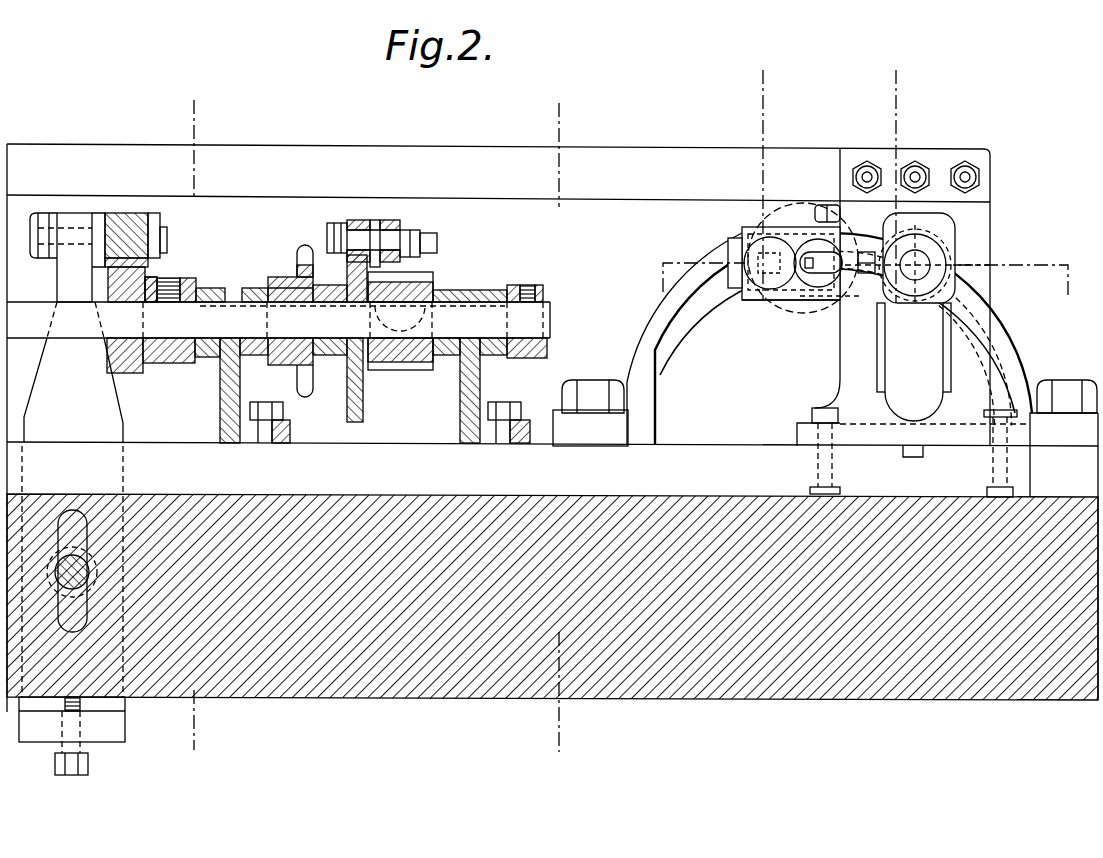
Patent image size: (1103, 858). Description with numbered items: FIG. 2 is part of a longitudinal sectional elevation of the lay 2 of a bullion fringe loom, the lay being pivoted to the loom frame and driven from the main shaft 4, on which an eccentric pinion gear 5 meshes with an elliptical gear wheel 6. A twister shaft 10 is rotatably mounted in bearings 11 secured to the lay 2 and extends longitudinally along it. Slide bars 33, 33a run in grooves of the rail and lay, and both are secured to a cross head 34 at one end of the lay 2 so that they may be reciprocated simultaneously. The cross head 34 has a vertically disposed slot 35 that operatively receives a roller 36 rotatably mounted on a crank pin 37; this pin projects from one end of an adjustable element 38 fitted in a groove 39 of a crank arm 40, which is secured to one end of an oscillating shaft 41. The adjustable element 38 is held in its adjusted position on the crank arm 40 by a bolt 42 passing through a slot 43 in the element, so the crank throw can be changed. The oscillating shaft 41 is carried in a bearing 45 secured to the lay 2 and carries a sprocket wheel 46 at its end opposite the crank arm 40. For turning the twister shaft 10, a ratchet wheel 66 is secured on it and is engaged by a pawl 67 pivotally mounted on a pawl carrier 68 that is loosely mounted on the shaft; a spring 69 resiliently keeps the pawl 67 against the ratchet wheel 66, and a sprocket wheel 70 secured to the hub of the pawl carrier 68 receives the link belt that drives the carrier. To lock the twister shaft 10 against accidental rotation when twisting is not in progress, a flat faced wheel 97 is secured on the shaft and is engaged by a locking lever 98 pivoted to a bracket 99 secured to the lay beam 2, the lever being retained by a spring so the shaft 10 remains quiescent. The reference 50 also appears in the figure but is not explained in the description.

The lay 2 is at (822, 683).
The main shaft 4 is at (667, 285).
The eccentric pinion gear 5 is at (540, 107).
The elliptical gear wheel 6 is at (174, 104).
The twister shaft 10 is at (532, 327).
The bearings 11 is at (229, 385).
The slide bar 33 is at (640, 152).
The slide bar 33a is at (685, 451).
The cross head 34 is at (983, 238).
The slot 35 is at (943, 365).
The roller 36 is at (926, 237).
The crank pin 37 is at (953, 273).
The adjustable element 38 is at (733, 243).
The groove 39 is at (748, 300).
The crank arm 40 is at (801, 294).
The oscillating shaft 41 is at (821, 294).
The bolt 42 is at (763, 244).
The slot 43 is at (803, 243).
The bearing 45 is at (885, 240).
The sprocket wheel 46 is at (785, 212).
The section line 50 is at (765, 82).
The ratchet wheel 66 is at (410, 358).
The pawl 67 is at (385, 222).
The pawl carrier 68 is at (364, 411).
The spring 69 is at (417, 262).
The sprocket wheel 70 is at (298, 252).
The flat faced wheel 97 is at (127, 373).
The locking lever 98 is at (122, 213).
The bracket 99 is at (60, 280).